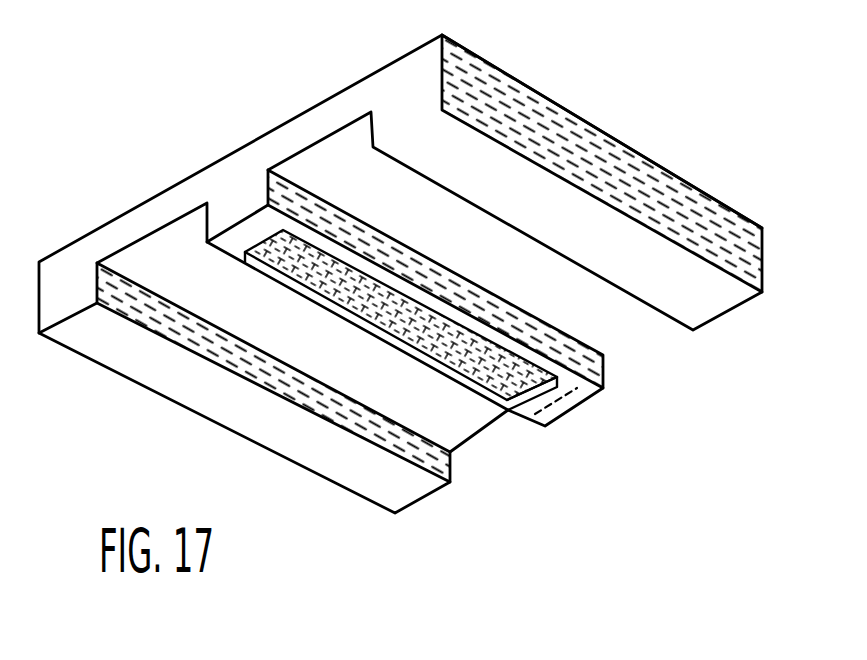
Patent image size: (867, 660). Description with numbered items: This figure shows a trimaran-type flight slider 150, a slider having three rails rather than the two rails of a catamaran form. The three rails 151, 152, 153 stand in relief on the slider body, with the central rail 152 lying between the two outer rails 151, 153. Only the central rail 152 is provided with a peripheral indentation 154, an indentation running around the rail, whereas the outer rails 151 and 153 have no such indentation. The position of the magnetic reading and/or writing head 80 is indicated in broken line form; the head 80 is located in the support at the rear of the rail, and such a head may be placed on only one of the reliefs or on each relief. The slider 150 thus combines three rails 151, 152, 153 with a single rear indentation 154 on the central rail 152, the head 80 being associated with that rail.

The trimaran-type flight slider 150 is at (646, 121).
The rail 151 is at (716, 310).
The central rail 152 is at (507, 412).
The rail 153 is at (187, 397).
The peripheral indentation 154 is at (300, 220).
The magnetic reading and/or writing head 80 is at (582, 402).